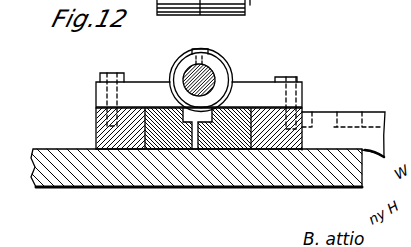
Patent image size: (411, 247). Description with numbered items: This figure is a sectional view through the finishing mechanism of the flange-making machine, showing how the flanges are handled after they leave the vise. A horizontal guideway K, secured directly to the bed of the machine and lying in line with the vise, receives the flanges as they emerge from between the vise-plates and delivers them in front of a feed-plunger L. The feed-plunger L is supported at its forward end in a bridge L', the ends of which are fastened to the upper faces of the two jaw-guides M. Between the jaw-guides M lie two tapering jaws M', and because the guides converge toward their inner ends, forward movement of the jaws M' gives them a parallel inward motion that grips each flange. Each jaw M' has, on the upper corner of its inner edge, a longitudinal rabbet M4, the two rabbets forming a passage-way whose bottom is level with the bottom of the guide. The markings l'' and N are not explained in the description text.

The feed-plunger L is at (203, 66).
The bridge L' is at (199, 103).
The bearing ring l'' is at (211, 80).
The horizontal guideway K is at (349, 118).
The jaw-guides M is at (196, 155).
The hidden plate N is at (342, 126).
The jaws M' is at (199, 161).
The longitudinal rabbet M4 is at (190, 149).